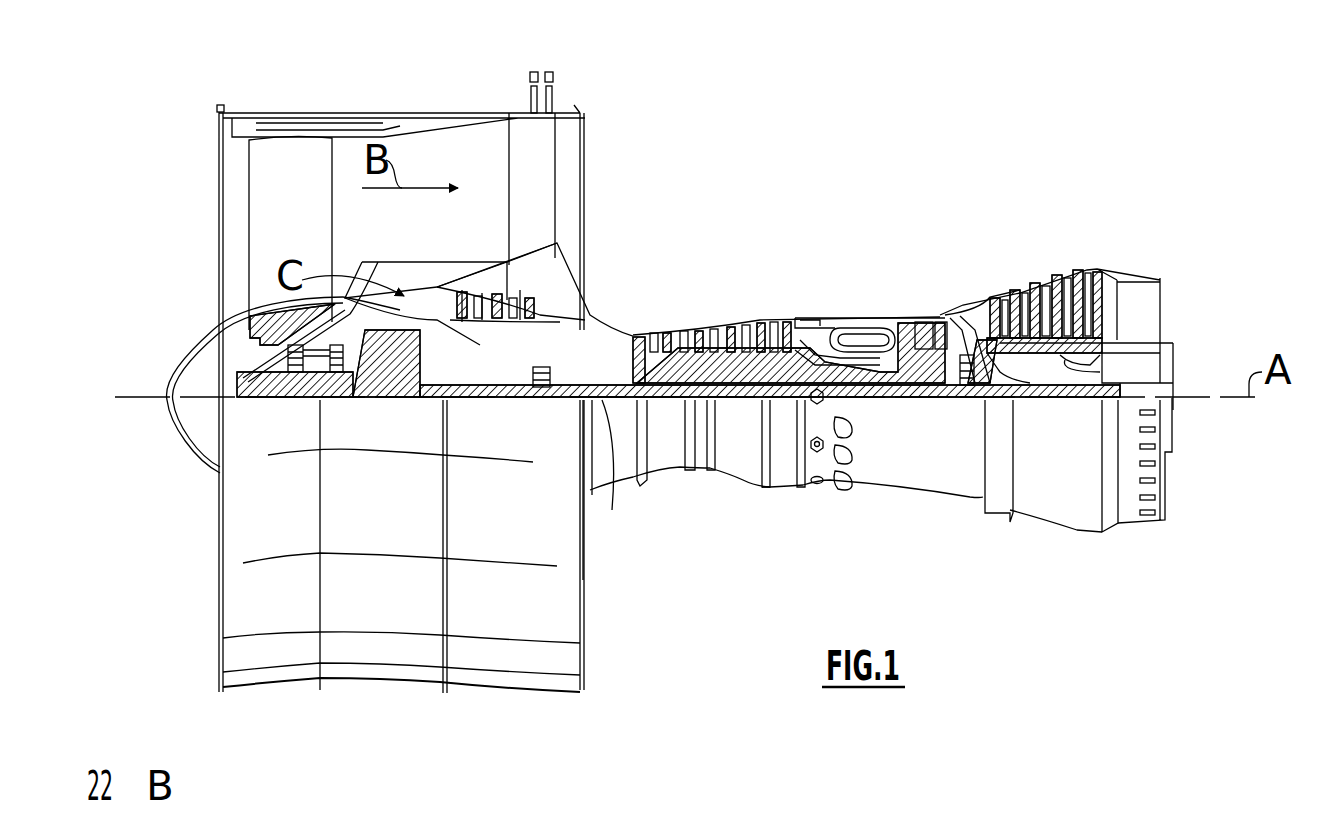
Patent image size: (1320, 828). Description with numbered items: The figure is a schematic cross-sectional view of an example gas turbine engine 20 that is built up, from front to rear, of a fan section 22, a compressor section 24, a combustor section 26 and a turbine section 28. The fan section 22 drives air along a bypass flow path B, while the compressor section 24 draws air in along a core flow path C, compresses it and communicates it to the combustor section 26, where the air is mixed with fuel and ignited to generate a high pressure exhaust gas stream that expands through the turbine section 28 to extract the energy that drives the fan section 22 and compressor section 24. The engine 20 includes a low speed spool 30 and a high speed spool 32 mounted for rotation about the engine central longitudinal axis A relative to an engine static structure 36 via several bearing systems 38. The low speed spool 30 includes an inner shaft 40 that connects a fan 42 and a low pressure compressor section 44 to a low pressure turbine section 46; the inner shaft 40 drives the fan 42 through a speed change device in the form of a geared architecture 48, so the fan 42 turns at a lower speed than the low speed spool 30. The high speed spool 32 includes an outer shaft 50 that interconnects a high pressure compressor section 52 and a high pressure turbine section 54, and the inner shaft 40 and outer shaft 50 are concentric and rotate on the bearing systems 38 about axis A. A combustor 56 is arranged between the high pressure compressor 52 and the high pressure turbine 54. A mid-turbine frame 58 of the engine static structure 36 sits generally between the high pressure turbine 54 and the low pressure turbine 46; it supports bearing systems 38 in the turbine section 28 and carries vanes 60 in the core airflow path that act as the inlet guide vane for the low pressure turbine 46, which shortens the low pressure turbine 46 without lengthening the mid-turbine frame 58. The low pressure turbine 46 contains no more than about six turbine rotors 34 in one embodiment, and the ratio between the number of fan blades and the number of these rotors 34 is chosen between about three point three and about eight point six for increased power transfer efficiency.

The gas turbine engine 20 is at (866, 157).
The fan section 22 is at (205, 88).
The compressor section 24 is at (845, 234).
The combustor section 26 is at (945, 234).
The turbine section 28 is at (1120, 234).
The low speed spool 30 is at (740, 405).
The high speed spool 32 is at (783, 335).
The turbine rotors 34 is at (1060, 365).
The engine static structure 36 is at (782, 490).
The bearing systems 38 is at (300, 400).
The inner shaft 40 is at (603, 400).
The fan 42 is at (305, 245).
The low pressure compressor section 44 is at (535, 275).
The low pressure turbine section 46 is at (1048, 285).
The geared architecture 48 is at (405, 400).
The outer shaft 50 is at (868, 400).
The high pressure compressor section 52 is at (716, 335).
The high pressure turbine section 54 is at (923, 320).
The combustor 56 is at (858, 335).
The mid-turbine frame 58 is at (964, 304).
The vanes 60 is at (1003, 372).